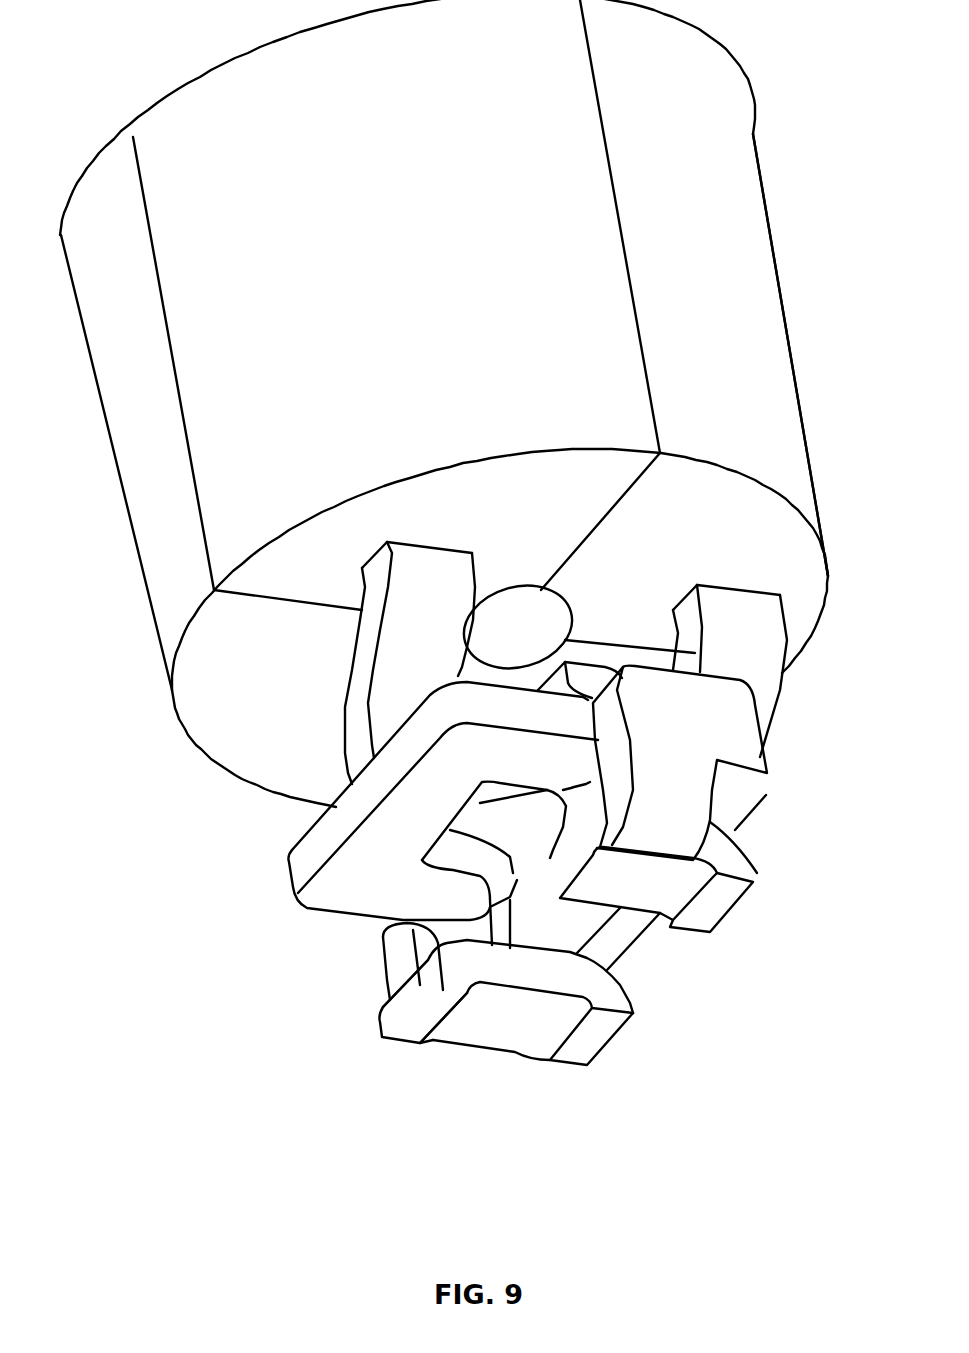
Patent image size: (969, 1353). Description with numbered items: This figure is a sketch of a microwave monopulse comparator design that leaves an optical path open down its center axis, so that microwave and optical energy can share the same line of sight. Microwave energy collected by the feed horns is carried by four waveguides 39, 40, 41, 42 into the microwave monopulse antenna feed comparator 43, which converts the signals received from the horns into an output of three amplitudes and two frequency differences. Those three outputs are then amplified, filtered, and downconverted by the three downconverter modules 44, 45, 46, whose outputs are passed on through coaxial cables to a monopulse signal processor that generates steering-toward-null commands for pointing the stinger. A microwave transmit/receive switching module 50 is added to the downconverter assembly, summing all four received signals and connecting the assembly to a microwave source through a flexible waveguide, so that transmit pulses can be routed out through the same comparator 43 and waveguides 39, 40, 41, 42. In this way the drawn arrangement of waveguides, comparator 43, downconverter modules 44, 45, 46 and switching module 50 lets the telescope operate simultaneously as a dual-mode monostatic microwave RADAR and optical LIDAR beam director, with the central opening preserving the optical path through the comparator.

The microwave transmit/receive switching module 50 is at (145, 435).
The downconverter module 44 is at (582, 235).
The downconverter module 45 is at (762, 392).
The downconverter module 46 is at (302, 870).
The waveguide 39 is at (525, 903).
The microwave monopulse antenna feed comparator 43 is at (747, 743).
The waveguide 40 is at (730, 892).
The waveguide 41 is at (413, 1020).
The waveguide 42 is at (593, 1047).